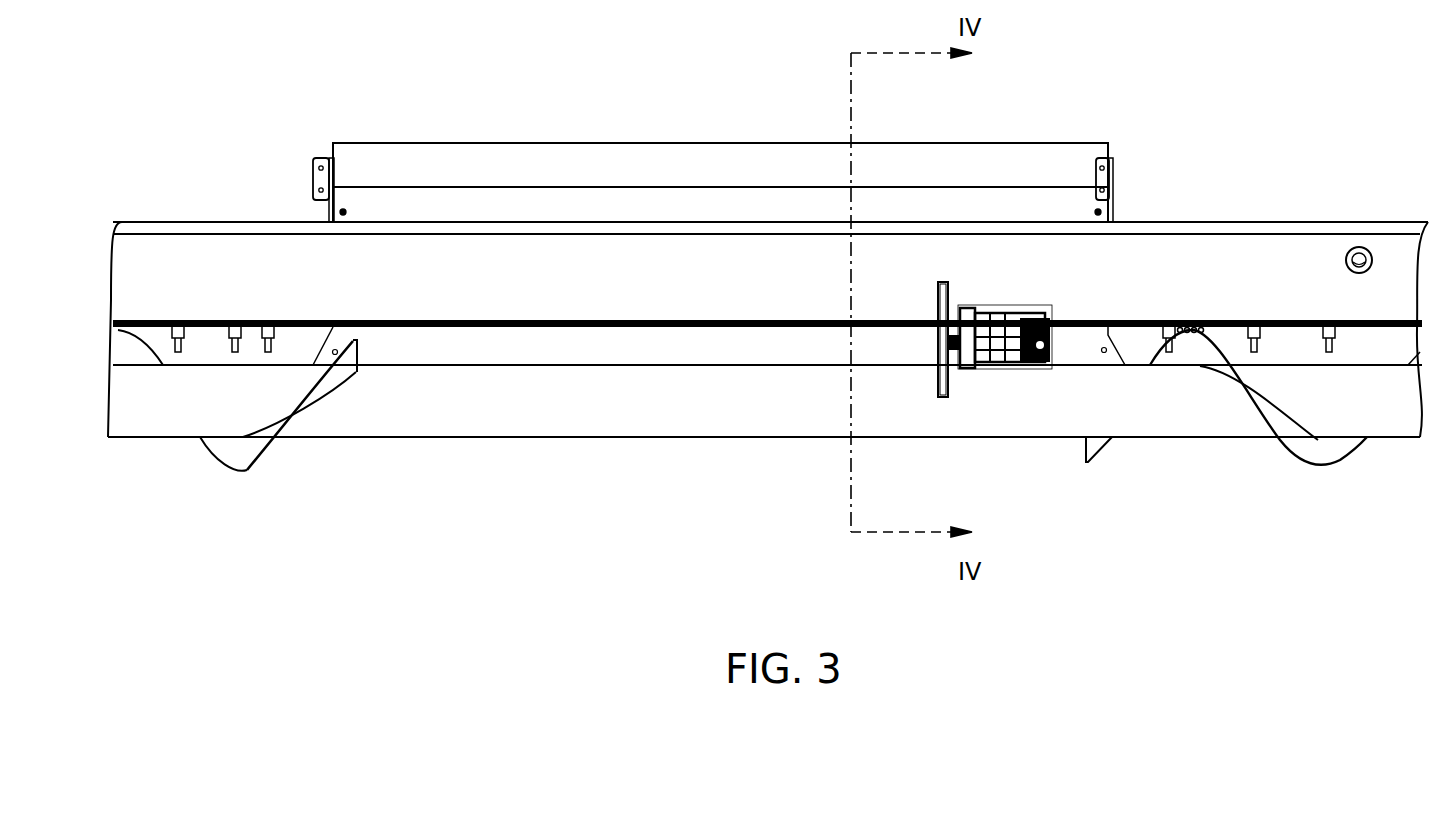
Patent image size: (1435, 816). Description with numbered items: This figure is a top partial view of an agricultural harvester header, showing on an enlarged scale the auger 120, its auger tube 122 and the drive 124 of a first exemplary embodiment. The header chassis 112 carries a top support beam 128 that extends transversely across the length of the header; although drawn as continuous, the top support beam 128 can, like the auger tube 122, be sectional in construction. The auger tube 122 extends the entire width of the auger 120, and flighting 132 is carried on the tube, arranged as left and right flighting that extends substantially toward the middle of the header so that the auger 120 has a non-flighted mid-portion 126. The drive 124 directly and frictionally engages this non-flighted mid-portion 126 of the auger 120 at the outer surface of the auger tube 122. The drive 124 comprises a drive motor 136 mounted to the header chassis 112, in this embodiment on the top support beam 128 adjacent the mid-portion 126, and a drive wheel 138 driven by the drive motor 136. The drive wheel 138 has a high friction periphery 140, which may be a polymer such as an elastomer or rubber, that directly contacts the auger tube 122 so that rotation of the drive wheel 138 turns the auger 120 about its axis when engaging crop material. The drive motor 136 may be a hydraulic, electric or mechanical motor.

The header chassis 112 is at (1317, 220).
The auger 120 is at (1128, 462).
The auger tube 122 is at (450, 437).
The drive 124 is at (1004, 282).
The non-flighted mid-portion 126 is at (586, 430).
The top support beam 128 is at (1143, 227).
The flighting 132 is at (248, 472).
The drive motor 136 is at (1015, 368).
The drive wheel 138 is at (940, 308).
The high friction periphery 140 is at (946, 283).